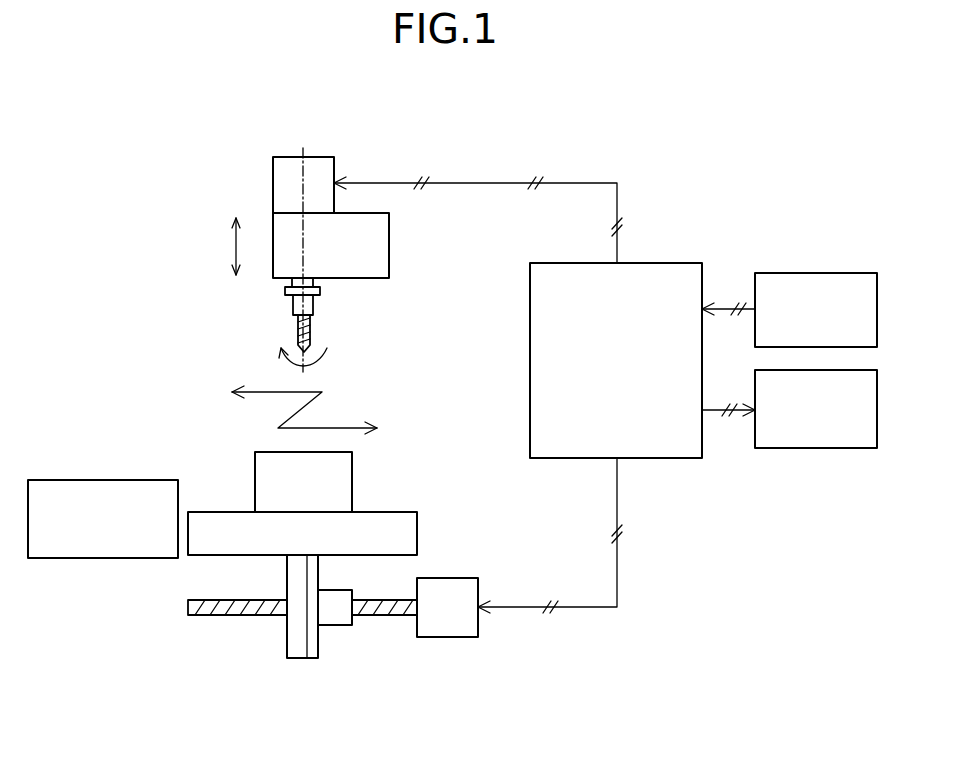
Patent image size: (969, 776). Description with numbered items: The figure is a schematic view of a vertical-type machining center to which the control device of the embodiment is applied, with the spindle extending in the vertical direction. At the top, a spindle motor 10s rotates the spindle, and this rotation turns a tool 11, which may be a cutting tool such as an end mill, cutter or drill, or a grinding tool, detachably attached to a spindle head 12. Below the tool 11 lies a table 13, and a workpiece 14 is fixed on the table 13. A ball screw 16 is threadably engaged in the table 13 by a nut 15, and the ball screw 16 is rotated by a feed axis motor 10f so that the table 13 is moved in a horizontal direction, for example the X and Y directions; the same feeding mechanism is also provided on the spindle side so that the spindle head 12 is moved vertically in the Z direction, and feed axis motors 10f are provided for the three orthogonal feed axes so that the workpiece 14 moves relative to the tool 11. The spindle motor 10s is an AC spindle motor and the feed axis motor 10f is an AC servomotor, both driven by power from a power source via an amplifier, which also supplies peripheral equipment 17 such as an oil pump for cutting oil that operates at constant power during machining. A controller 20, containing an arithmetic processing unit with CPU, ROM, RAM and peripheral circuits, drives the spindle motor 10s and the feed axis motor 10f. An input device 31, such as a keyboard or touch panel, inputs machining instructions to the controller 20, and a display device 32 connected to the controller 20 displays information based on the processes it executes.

The spindle motor 10s is at (331, 157).
The spindle head 12 is at (389, 255).
The tool 11 is at (320, 305).
The controller 20 is at (530, 378).
The input device 31 is at (812, 273).
The display device 32 is at (808, 448).
The peripheral equipment 17 is at (95, 480).
The workpiece 14 is at (255, 475).
The table 13 is at (405, 512).
The nut 15 is at (340, 625).
The ball screw 16 is at (222, 617).
The feed axis motor 10f is at (452, 637).